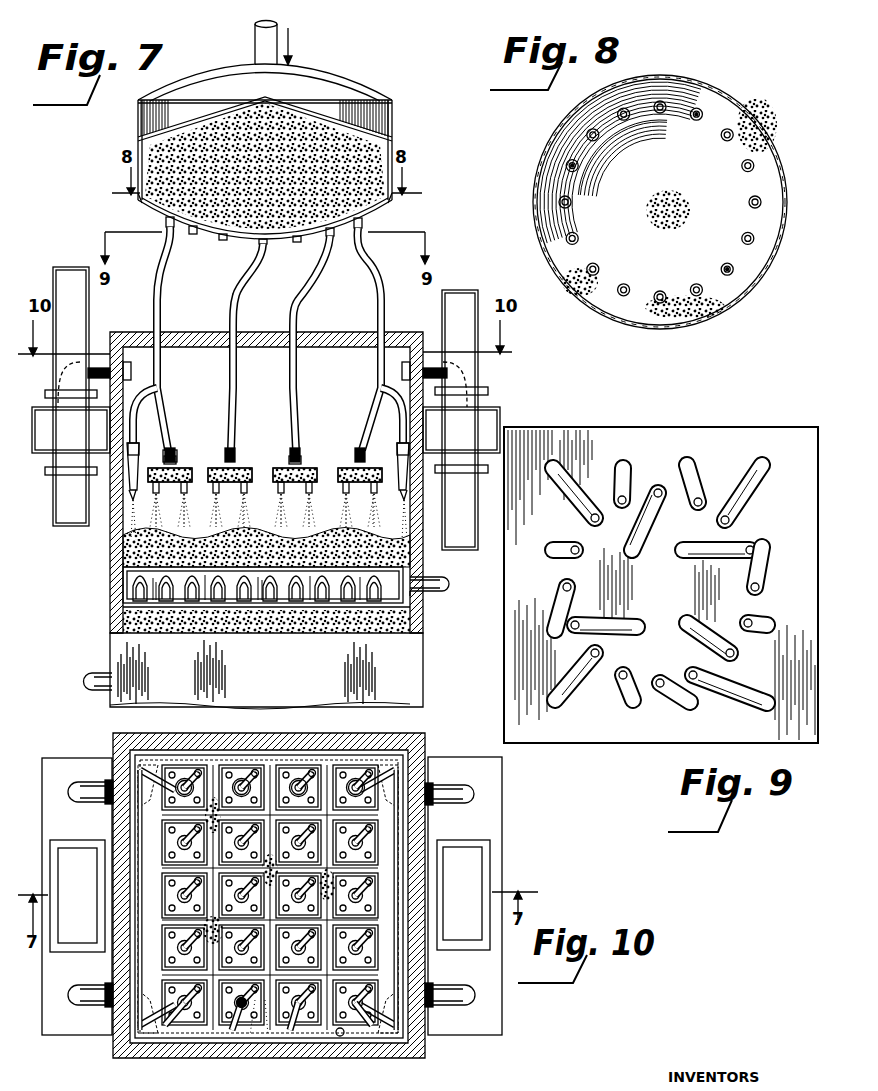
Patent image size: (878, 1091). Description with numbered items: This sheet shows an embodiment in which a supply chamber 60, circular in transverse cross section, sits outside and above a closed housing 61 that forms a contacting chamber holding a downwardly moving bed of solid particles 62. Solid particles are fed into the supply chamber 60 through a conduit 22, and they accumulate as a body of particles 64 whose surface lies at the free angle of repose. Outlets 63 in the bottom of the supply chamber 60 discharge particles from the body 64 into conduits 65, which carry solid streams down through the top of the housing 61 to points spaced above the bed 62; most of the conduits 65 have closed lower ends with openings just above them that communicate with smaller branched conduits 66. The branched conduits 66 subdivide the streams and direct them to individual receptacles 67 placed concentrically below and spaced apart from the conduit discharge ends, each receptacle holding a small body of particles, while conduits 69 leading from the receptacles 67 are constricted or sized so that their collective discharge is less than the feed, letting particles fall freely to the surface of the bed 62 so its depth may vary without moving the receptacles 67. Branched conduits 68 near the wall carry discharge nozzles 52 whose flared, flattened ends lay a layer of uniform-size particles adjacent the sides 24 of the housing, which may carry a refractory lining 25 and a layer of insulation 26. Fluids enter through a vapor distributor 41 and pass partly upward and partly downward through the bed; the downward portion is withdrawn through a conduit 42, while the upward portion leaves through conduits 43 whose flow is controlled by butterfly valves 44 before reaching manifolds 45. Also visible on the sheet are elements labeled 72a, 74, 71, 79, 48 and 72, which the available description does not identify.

In FIG. 7, the conduit 22 is at (255, 46).
In FIG. 7, the supply chamber 60 is at (393, 112).
In FIG. 8, the supply chamber 60 is at (652, 328).
In FIG. 7, the body of particles 64 is at (205, 152).
In FIG. 7, the outlets 63 is at (140, 202).
In FIG. 8, the outlets 63 is at (568, 163).
In FIG. 7, the conduits 65 is at (168, 278).
In FIG. 8, the conduits 65 is at (588, 135).
In FIG. 9, the conduits 65 is at (562, 546).
In FIG. 10, the conduits 65 is at (165, 768).
In FIG. 7, the manifolds 45 is at (58, 270).
In FIG. 7, the butterfly valves 44 is at (98, 366).
In FIG. 10, the butterfly valves 44 is at (105, 806).
In FIG. 7, the conduits 43 is at (62, 364).
In FIG. 10, the conduits 43 is at (88, 784).
In FIG. 7, the branched conduits 66 is at (165, 426).
In FIG. 10, the branched conduits 66 is at (172, 790).
In FIG. 7, the conduits 68 is at (137, 410).
In FIG. 10, the conduits 68 is at (205, 765).
In FIG. 7, the nozzle fitting 72a is at (178, 460).
In FIG. 7, the nozzle connector 74 is at (165, 462).
In FIG. 7, the receptacles 67 is at (192, 470).
In FIG. 10, the receptacles 67 is at (352, 768).
In FIG. 7, the discharge nozzles 52 is at (130, 480).
In FIG. 10, the discharge nozzles 52 is at (140, 755).
In FIG. 7, the spray 71 is at (199, 511).
In FIG. 7, the conduits 69 is at (308, 494).
In FIG. 10, the conduits 69 is at (270, 1040).
In FIG. 7, the refractory lining 25 is at (123, 556).
In FIG. 10, the refractory lining 25 is at (285, 760).
In FIG. 7, the sides 24 is at (123, 577).
In FIG. 10, the sides 24 is at (315, 760).
In FIG. 7, the layer of insulation 26 is at (123, 597).
In FIG. 10, the layer of insulation 26 is at (250, 760).
In FIG. 7, the vapor distributor 41 is at (123, 608).
In FIG. 7, the bed of solid particles 62 is at (395, 551).
In FIG. 10, the bed of solid particles 62 is at (340, 1040).
In FIG. 7, the drain 79 is at (426, 594).
In FIG. 7, the housing 61 is at (275, 669).
In FIG. 9, the housing 61 is at (724, 427).
In FIG. 10, the housing 61 is at (413, 745).
In FIG. 7, the conduit 42 is at (96, 692).
In FIG. 10, the opening 48 is at (76, 852).
In FIG. 10, the spray nozzle 72 is at (245, 1040).